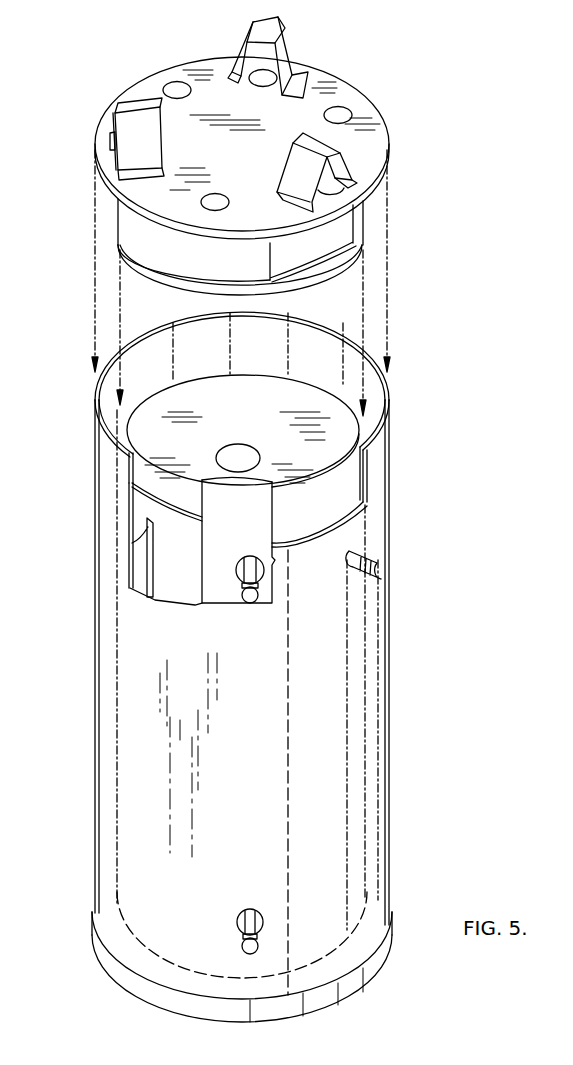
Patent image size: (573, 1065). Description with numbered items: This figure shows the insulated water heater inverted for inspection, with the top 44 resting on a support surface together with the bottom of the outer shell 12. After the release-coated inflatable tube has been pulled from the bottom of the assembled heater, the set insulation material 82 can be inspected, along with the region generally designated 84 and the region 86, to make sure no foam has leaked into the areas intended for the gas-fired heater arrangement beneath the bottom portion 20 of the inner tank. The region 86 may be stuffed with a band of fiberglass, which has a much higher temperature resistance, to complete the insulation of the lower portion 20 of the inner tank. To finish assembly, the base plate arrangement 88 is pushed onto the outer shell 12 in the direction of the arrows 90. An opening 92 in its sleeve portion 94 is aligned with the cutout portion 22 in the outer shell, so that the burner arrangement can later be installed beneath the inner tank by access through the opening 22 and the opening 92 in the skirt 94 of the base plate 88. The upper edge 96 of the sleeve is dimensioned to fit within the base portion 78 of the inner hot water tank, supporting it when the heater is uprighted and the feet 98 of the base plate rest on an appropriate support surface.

The outer shell 12 is at (395, 665).
The bottom portion of the inner tank 20 is at (147, 505).
The cutout portion 22 is at (366, 460).
The top 44 is at (358, 984).
The base portion of the inner hot water tank 78 is at (117, 433).
The set insulation material 82 is at (147, 527).
The region 84 is at (242, 422).
The region 86 is at (350, 505).
The base plate arrangement 88 is at (394, 132).
The arrows 90 is at (93, 349).
The opening 92 is at (367, 225).
The sleeve portion 94 is at (132, 231).
The upper edge of the sleeve 96 is at (140, 271).
The feet 98 is at (278, 20).